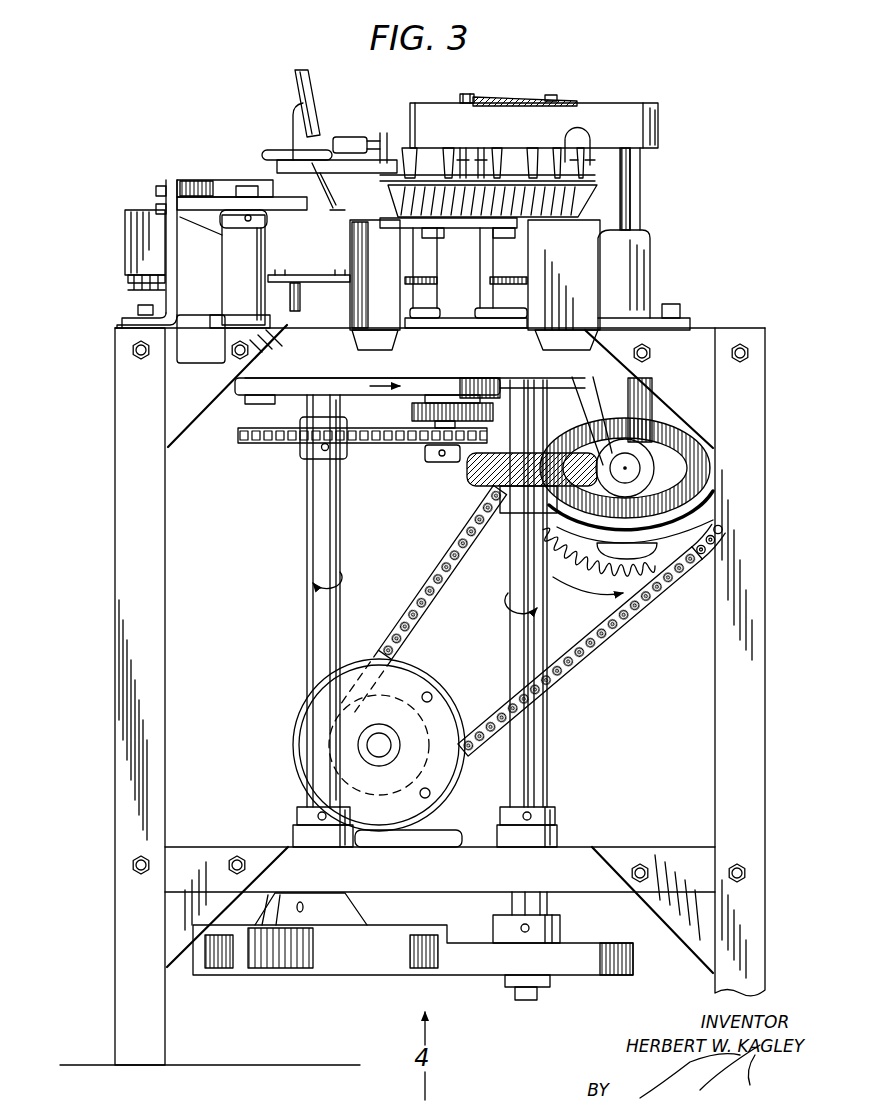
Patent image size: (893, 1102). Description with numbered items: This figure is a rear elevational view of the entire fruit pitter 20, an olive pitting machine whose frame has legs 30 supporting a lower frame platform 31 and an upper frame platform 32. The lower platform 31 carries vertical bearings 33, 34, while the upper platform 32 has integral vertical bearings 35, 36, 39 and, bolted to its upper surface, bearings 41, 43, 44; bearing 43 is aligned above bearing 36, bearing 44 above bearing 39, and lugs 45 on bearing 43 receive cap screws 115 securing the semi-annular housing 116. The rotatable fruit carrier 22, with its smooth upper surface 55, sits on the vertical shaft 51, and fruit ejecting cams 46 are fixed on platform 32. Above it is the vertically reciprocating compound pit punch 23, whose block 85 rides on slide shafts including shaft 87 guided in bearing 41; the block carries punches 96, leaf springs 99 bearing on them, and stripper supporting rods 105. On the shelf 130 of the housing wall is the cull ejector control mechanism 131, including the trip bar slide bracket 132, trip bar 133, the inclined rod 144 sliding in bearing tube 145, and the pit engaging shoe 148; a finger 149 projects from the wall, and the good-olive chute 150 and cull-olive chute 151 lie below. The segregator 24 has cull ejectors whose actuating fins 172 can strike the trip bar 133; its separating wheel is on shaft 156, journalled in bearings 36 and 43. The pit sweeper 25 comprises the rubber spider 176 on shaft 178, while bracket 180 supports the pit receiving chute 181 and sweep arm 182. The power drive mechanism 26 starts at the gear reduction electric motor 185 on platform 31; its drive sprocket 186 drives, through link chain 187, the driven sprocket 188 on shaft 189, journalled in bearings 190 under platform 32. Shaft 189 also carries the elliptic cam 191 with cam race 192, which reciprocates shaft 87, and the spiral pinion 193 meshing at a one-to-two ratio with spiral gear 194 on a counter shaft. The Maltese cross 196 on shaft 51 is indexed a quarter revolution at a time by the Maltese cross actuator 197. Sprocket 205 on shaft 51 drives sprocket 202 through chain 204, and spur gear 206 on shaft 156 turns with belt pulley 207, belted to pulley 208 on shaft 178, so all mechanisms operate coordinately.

The fruit pitter 20 is at (137, 112).
The rotatable fruit carrier 22 is at (125, 233).
The vertically reciprocating compound pit punch 23 is at (645, 102).
The segregator 24 is at (425, 163).
The pit sweeper 25 is at (204, 210).
The power drive mechanism 26 is at (683, 585).
The legs 30 is at (148, 654).
The lower frame platform 31 is at (574, 870).
The upper frame platform 32 is at (303, 338).
The vertical bearing 33 is at (340, 822).
The vertical bearing 34 is at (512, 835).
The vertical bearing 35 is at (496, 392).
The vertical bearing 36 is at (455, 378).
The vertical bearing 39 is at (255, 378).
The vertical bearing 41 is at (648, 290).
The vertical bearing 43 is at (468, 292).
The vertical bearing 44 is at (240, 268).
The lugs 45 is at (503, 225).
The fruit ejecting cams 46 is at (288, 300).
The shaft 51 is at (322, 530).
The upper surface 55 is at (148, 210).
The block 85 is at (645, 127).
The shaft 87 is at (640, 163).
The punch 96 is at (480, 158).
The leaf springs 99 is at (507, 100).
The stripper supporting rod 105 is at (466, 94).
The cap screws 115 is at (493, 236).
The semi-annular housing 116 is at (583, 206).
The shelf 130 is at (383, 173).
The cull ejector control mechanism 131 is at (354, 137).
The trip bar slide bracket 132 is at (265, 152).
The trip bar 133 is at (384, 135).
The rod 144 is at (316, 145).
The bearing tube 145 is at (297, 90).
The pit engaging shoe 148 is at (332, 212).
The finger 149 is at (577, 146).
The good-olive chute 150 is at (573, 262).
The cull-olive chute 151 is at (367, 257).
The shaft 156 is at (462, 445).
The actuating fin 172 is at (530, 160).
The spider 176 is at (292, 210).
The shaft 178 is at (240, 402).
The bracket 180 is at (167, 292).
The pit receiving chute 181 is at (193, 357).
The sweep arm 182 is at (175, 180).
The gear reduction electric motor 185 is at (302, 742).
The drive sprocket 186 is at (443, 730).
The link chain 187 is at (628, 625).
The driven sprocket 188 is at (599, 572).
The shaft 189 is at (632, 468).
The bearings 190 is at (655, 415).
The elliptic cam 191 is at (703, 500).
The cam race 192 is at (703, 467).
The spiral pinion 193 is at (627, 530).
The spiral gear 194 is at (467, 477).
The Maltese cross 196 is at (355, 960).
The Maltese cross actuator 197 is at (590, 962).
The sprocket 202 is at (427, 460).
The chain 204 is at (388, 443).
The sprocket 205 is at (303, 445).
The spur gear 206 is at (493, 410).
The belt pulley 207 is at (470, 380).
The pulley 208 is at (232, 396).